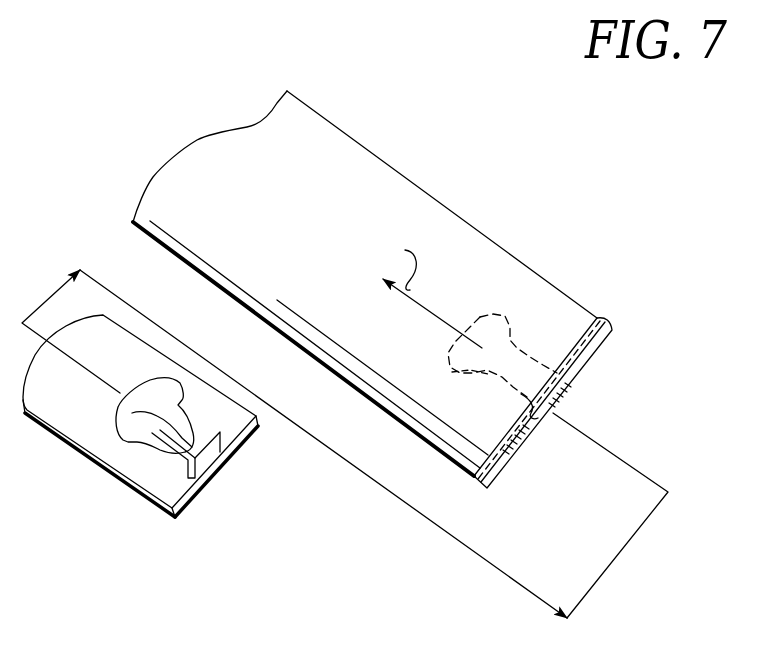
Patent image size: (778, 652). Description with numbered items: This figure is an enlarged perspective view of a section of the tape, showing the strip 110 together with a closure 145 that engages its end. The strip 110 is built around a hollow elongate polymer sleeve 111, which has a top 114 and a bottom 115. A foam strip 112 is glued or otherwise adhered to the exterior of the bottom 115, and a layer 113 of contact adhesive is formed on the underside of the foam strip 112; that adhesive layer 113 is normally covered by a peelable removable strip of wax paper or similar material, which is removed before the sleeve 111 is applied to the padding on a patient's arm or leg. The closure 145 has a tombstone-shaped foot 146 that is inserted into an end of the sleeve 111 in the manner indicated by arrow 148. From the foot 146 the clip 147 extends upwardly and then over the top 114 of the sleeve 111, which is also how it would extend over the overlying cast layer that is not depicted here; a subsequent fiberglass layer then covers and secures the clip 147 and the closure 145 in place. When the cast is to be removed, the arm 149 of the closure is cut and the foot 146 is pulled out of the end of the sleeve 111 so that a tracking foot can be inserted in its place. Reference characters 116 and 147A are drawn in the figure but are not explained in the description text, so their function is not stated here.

The strip 110 is at (182, 132).
The hollow elongate polymer sleeve 111 is at (512, 307).
The foam strip 112 is at (600, 328).
The layer of contact adhesive 113 is at (565, 400).
The top of sleeve 114 is at (253, 263).
The bottom of sleeve 115 is at (530, 423).
The tab 116 is at (533, 373).
The closure 145 is at (172, 521).
The tombstone-shaped foot 146 is at (90, 433).
The clip 147 is at (202, 467).
The knob outline (hidden) 147A is at (480, 317).
The arrow 148 is at (648, 520).
The arm 149 is at (203, 470).